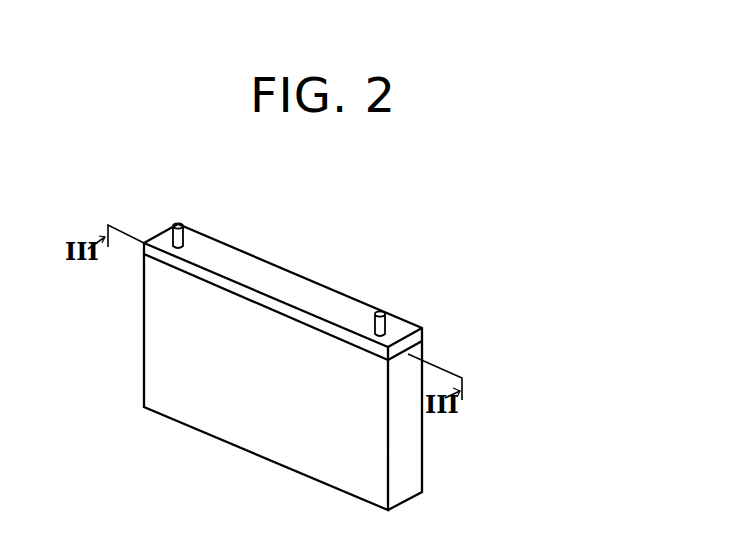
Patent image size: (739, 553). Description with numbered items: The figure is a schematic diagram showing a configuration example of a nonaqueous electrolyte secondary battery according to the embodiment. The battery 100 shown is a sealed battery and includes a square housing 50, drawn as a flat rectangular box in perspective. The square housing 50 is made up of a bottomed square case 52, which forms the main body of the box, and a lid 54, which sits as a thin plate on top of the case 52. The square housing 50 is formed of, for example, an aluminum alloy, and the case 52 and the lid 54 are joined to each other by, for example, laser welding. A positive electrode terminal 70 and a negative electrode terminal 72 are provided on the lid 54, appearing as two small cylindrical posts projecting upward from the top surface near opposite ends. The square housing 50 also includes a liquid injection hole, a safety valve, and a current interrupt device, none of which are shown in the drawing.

The battery 100 is at (535, 258).
The square housing 50 is at (497, 317).
The case 52 is at (410, 452).
The lid 54 is at (412, 343).
The positive electrode terminal 70 is at (179, 222).
The negative electrode terminal 72 is at (382, 311).